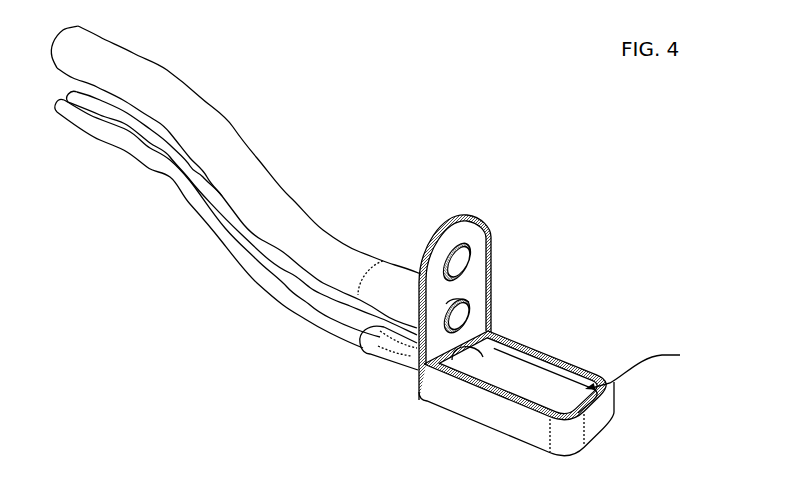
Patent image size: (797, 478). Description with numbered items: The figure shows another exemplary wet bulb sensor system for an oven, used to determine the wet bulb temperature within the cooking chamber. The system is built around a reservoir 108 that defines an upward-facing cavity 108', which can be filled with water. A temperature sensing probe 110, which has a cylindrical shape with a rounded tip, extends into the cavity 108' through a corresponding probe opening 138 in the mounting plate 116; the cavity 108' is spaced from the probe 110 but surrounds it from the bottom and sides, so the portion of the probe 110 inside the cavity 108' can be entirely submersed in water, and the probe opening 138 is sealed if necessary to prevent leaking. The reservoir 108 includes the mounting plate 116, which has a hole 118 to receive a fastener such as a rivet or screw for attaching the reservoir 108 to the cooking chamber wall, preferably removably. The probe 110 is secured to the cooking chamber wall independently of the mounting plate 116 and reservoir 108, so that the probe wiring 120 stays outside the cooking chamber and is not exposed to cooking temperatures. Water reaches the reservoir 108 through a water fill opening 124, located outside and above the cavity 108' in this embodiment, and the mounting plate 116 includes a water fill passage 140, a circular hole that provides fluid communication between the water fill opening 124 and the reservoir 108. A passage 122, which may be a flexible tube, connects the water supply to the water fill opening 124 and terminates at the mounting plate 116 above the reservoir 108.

The reservoir 108 is at (585, 393).
The upward-facing cavity 108' is at (653, 367).
The temperature sensing probe 110 is at (547, 393).
The mounting plate 116 is at (447, 222).
The hole 118 is at (470, 252).
The probe wiring 120 is at (283, 306).
The passage 122 is at (262, 166).
The water fill opening 124 is at (458, 317).
The probe opening 138 is at (548, 352).
The water fill passage 140 is at (460, 300).